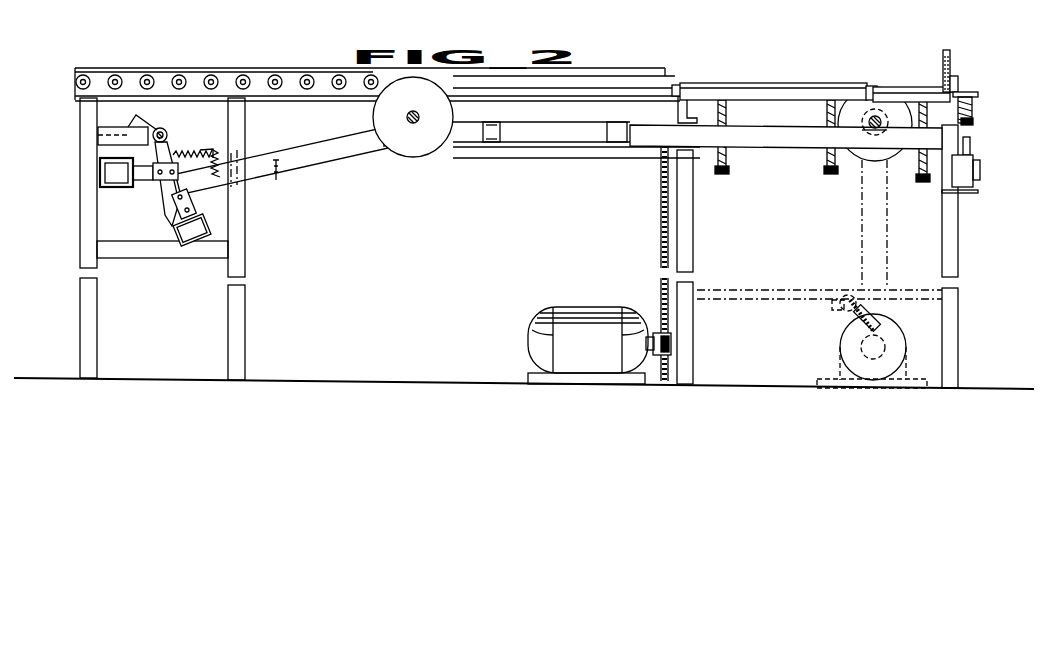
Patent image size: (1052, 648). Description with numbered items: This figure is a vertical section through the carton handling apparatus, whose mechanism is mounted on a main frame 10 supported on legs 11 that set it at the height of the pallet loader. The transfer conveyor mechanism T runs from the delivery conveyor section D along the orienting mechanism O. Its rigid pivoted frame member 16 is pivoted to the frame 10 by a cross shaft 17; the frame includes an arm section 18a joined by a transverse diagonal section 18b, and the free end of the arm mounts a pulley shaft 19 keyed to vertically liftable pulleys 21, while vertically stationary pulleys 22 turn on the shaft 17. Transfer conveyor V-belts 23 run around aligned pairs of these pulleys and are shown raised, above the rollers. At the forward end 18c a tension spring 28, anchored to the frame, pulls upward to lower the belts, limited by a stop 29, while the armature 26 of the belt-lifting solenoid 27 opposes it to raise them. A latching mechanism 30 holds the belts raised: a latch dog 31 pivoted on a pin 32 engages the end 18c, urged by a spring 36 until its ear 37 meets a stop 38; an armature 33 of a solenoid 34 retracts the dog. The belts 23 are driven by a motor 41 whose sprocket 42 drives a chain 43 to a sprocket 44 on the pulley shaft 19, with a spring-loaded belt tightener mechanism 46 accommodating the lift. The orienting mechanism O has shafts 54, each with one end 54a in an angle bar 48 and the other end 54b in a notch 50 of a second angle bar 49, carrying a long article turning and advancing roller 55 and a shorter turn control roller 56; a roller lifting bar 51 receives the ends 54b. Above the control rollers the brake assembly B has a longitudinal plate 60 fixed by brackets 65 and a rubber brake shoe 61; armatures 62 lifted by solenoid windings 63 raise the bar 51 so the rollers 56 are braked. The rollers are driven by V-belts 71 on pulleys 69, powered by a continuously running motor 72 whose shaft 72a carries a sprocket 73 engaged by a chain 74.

The delivery conveyor section D is at (115, 63).
The frame 10 is at (74, 89).
The legs 11 is at (228, 313).
The rigid pivoted frame member 16 is at (300, 178).
The cross shaft 17 is at (420, 110).
The arm section 18a is at (524, 142).
The transverse diagonal section 18b is at (370, 150).
The forward end of the pivotal frame 18c is at (222, 193).
The pulley shaft 19 is at (868, 120).
The vertically liftable pulleys 21 is at (870, 160).
The vertically stationary pulleys 22 is at (428, 146).
The transfer conveyor V-belts 23 is at (645, 60).
The armature 26 is at (175, 206).
The belt-lifting solenoid 27 is at (183, 232).
The tension spring 28 is at (226, 150).
The stop 29 is at (228, 160).
The latching mechanism 30 is at (96, 183).
The latch dog 31 is at (176, 143).
The pin 32 is at (164, 121).
The armature 33 is at (162, 183).
The solenoid 34 is at (108, 171).
The spring 36 is at (208, 152).
The ear 37 is at (130, 123).
The stop 38 is at (98, 135).
The motor 41 is at (840, 364).
The sprocket 42 is at (860, 347).
The chain 43 is at (887, 252).
The sprocket 44 is at (872, 128).
The spring-loaded belt tightener mechanism 46 is at (850, 328).
The angle bar 48 is at (664, 98).
The second angle bar 49 is at (973, 108).
The notch 50 is at (957, 90).
The roller lifting bar 51 is at (974, 122).
The shafts 54 is at (870, 86).
The shaft end 54a is at (678, 85).
The shaft end 54b is at (978, 95).
The article turning and advancing roller 55 is at (765, 83).
The turn control roller 56 is at (893, 90).
The longitudinal plate 60 is at (946, 52).
The rubber brake shoe 61 is at (948, 84).
The armatures 62 is at (971, 152).
The solenoid windings 63 is at (976, 167).
The brackets 65 is at (949, 64).
The pulleys 69 is at (826, 172).
The V-belts 71 is at (830, 178).
The motor 72 is at (603, 346).
The motor shaft 72a is at (646, 343).
The sprocket 73 is at (673, 343).
The chain 74 is at (660, 268).
The transfer conveyor mechanism T is at (617, 68).
The orienting mechanism O is at (795, 78).
The brake assembly B is at (950, 80).